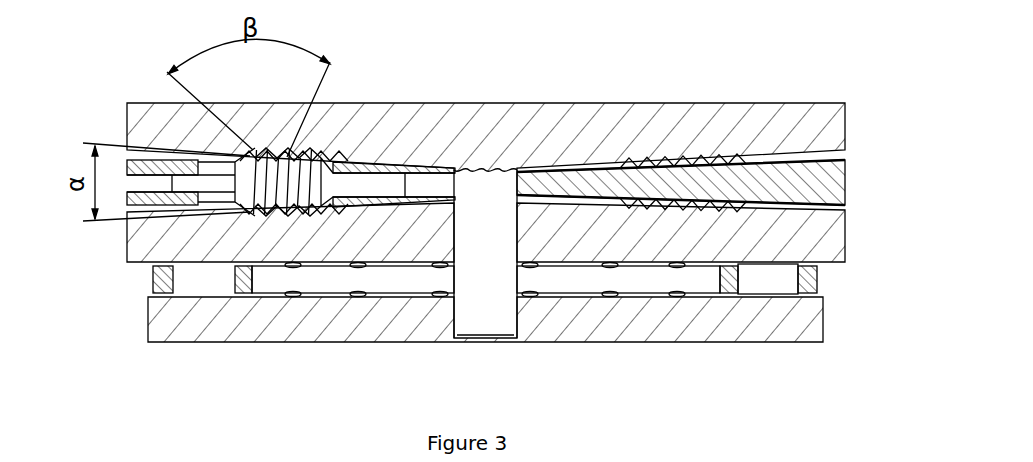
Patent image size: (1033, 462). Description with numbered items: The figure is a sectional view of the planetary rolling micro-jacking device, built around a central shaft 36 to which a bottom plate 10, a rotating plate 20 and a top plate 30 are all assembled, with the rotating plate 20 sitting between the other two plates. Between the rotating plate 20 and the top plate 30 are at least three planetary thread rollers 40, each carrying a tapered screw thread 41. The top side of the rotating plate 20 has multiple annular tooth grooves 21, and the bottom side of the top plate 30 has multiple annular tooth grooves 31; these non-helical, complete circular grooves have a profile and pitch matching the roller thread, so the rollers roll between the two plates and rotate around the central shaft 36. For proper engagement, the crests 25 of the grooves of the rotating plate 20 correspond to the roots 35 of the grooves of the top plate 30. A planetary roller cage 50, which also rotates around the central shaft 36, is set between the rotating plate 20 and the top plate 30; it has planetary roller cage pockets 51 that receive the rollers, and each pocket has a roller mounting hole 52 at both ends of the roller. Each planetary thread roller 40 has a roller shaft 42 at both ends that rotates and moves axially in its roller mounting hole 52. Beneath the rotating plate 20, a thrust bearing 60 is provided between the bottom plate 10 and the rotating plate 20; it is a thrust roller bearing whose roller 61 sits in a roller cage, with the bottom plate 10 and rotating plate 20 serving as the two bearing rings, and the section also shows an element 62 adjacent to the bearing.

The bottom plate 10 is at (285, 328).
The rotating plate 20 is at (370, 225).
The annular tooth grooves 21 is at (243, 218).
The crests 25 is at (668, 205).
The top plate 30 is at (582, 125).
The annular tooth grooves 31 is at (687, 157).
The roots 35 is at (645, 210).
The central shaft 36 is at (497, 310).
The planetary thread rollers 40 is at (276, 118).
The tapered screw thread 41 is at (312, 152).
The roller shaft 42 is at (185, 180).
The planetary roller cage 50 is at (685, 112).
The planetary roller cage pockets 51 is at (203, 157).
The roller mounting hole 52 is at (435, 180).
The thrust bearing 60 is at (703, 280).
The roller 61 is at (770, 282).
The spacer block 62 is at (729, 283).